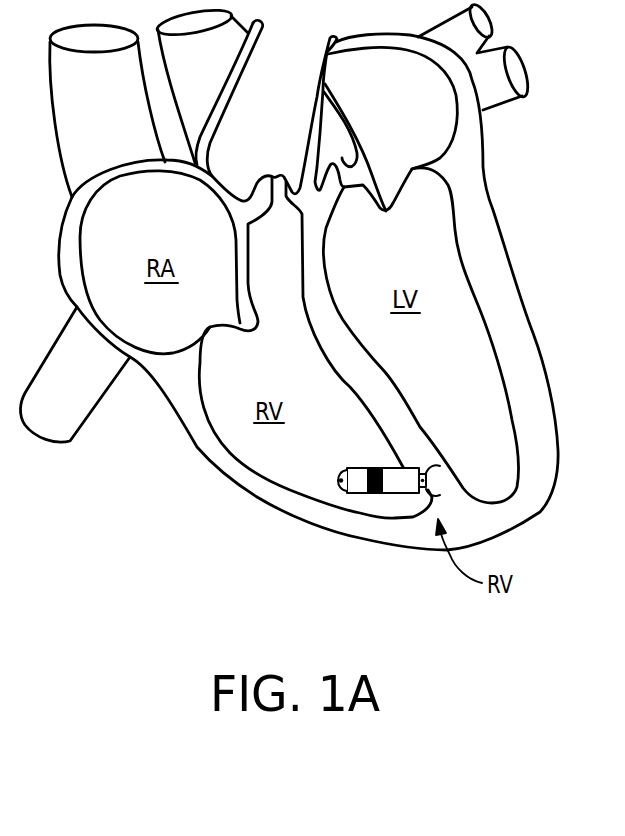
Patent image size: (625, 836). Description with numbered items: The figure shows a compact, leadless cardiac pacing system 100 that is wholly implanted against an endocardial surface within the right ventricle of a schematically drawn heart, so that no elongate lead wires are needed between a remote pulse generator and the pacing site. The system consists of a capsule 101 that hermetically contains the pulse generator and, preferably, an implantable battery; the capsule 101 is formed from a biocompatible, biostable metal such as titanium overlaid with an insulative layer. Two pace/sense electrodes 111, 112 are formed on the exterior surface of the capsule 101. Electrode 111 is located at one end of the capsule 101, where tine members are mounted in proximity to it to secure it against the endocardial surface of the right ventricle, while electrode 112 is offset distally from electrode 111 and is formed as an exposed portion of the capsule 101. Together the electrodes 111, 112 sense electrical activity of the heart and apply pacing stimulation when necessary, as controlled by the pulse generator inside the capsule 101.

The pacing system 100 is at (406, 497).
The capsule 101 is at (392, 467).
The pace/sense electrode 111 is at (427, 480).
The pace/sense electrode 112 is at (379, 493).